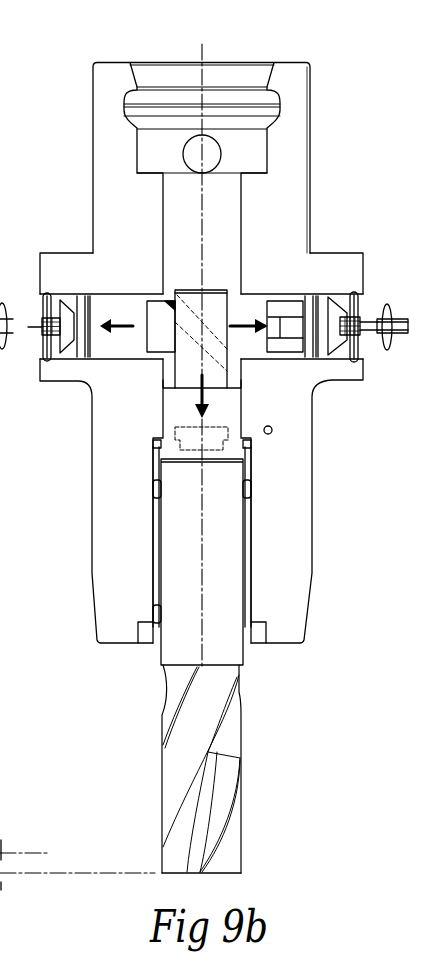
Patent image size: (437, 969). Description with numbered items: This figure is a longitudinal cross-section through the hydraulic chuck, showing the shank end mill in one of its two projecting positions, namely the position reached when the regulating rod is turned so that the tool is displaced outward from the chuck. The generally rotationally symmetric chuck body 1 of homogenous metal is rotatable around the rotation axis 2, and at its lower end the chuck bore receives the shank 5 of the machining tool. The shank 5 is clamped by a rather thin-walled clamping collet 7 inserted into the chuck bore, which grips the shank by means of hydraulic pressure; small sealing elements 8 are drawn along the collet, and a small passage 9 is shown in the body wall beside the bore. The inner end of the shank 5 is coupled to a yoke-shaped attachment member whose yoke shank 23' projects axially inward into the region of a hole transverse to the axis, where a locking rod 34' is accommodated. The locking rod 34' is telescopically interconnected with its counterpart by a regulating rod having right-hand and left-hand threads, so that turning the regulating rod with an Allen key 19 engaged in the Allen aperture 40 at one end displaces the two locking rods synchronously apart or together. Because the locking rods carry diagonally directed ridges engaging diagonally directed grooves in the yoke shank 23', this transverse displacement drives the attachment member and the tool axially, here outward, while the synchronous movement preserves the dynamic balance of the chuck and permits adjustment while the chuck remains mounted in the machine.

The chuck body 1 is at (288, 602).
The rotation axis 2 is at (203, 50).
The shank 5 is at (176, 640).
The clamping collet 7 is at (245, 552).
The sealing ring 8 is at (152, 492).
The coolant outlet bore 9 is at (272, 428).
The Allen key 19 is at (382, 324).
The yoke shank 23' is at (144, 307).
The locking rod 34' is at (188, 364).
The Allen aperture 40 is at (362, 328).